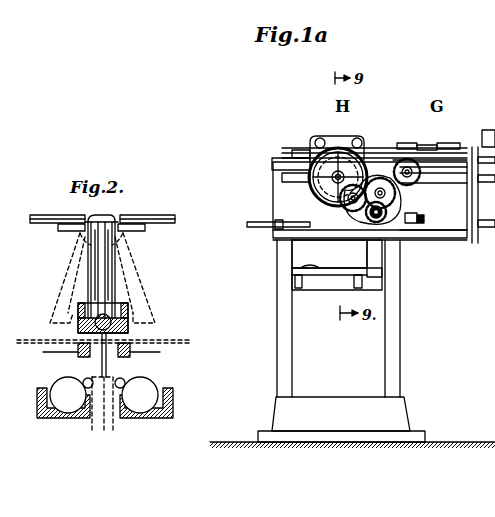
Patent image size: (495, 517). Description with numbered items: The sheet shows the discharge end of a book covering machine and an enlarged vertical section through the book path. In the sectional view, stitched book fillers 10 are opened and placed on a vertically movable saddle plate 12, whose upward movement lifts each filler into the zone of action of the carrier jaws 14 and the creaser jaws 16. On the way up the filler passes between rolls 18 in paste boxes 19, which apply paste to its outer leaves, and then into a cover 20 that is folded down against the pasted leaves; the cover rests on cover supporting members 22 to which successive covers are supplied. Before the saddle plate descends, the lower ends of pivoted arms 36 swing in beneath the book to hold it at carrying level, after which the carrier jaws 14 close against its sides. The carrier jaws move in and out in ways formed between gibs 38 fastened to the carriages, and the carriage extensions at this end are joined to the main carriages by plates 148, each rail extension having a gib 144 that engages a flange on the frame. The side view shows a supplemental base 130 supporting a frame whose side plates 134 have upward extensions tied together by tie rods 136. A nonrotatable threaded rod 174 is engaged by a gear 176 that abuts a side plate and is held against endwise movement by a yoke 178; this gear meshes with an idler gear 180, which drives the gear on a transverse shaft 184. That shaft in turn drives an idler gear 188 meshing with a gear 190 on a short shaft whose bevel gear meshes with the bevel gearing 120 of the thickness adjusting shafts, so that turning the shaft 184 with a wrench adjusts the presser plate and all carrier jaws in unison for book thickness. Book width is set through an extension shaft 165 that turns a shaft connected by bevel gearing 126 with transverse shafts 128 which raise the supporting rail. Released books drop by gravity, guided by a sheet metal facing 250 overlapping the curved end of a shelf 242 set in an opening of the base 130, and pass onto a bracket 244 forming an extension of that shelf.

In FIG. 2, the carrier jaws 14 is at (58, 232).
In FIG. 1A, the carrier jaws 14 is at (383, 150).
In FIG. 2, the cover 20 is at (114, 250).
In FIG. 1A, the cover 20 is at (453, 145).
In FIG. 2, the stitched book fillers 10 is at (96, 279).
In FIG. 2, the saddle plate 12 is at (104, 278).
In FIG. 2, the pivoted arms 36 is at (50, 321).
In FIG. 2, the creaser jaws 16 is at (103, 318).
In FIG. 2, the cover supporting members 22 is at (78, 352).
In FIG. 2, the rolls 18 is at (86, 380).
In FIG. 2, the paste boxes 19 is at (53, 418).
In FIG. 1A, the supplemental base 130 is at (388, 343).
In FIG. 1A, the side plates 134 is at (282, 207).
In FIG. 1A, the yoke 178 is at (292, 154).
In FIG. 1A, the gib 144 is at (285, 178).
In FIG. 1A, the tie rods 136 is at (318, 140).
In FIG. 1A, the plates 148 is at (380, 150).
In FIG. 1A, the gibs 38 is at (418, 147).
In FIG. 1A, the threaded rod 174 is at (318, 186).
In FIG. 1A, the gear 176 is at (330, 194).
In FIG. 1A, the transverse shaft 184 is at (360, 222).
In FIG. 1A, the idler gear 180 is at (342, 213).
In FIG. 1A, the idler gear 188 is at (395, 200).
In FIG. 1A, the gear 190 is at (390, 200).
In FIG. 1A, the bevel gearing 120 is at (420, 182).
In FIG. 1A, the bevel gearing 126 is at (425, 220).
In FIG. 1A, the transverse shafts 128 is at (428, 233).
In FIG. 1A, the extension shaft 165 is at (307, 228).
In FIG. 1A, the sheet metal facing 250 is at (308, 258).
In FIG. 1A, the shelf 242 is at (293, 265).
In FIG. 1A, the bracket 244 is at (328, 270).